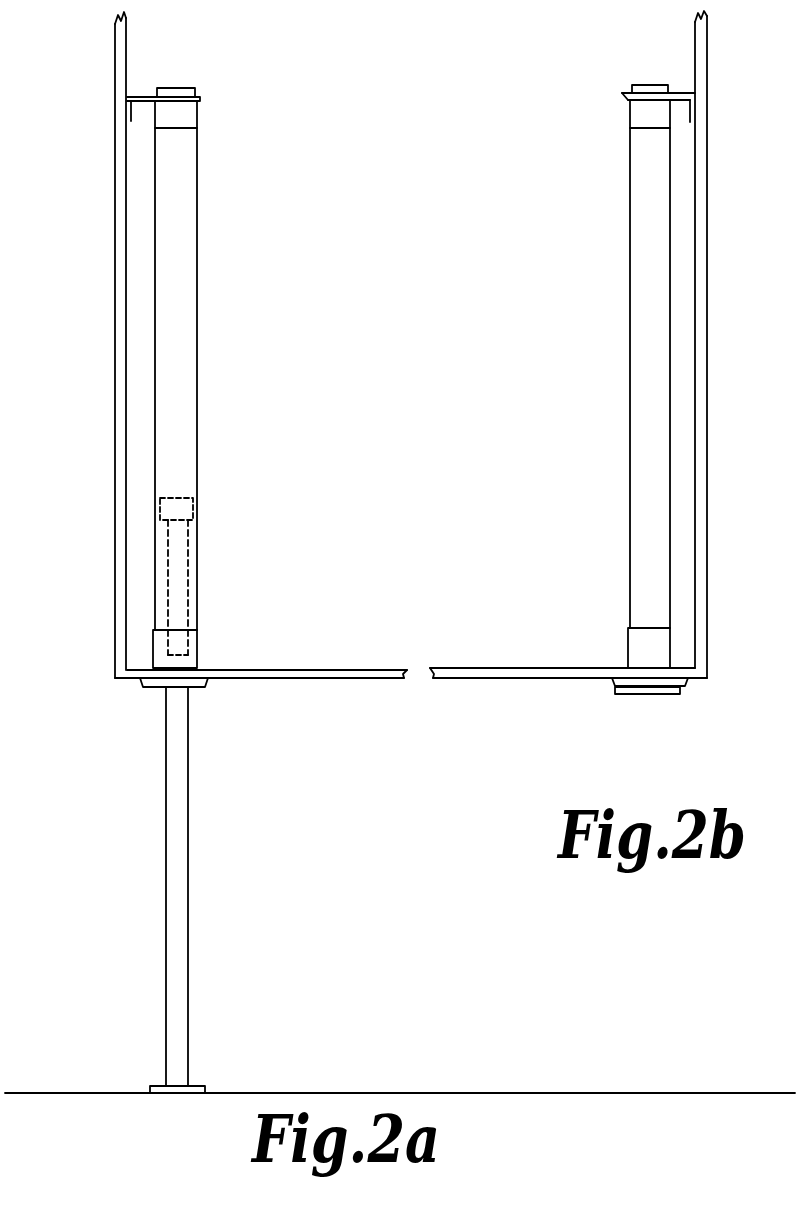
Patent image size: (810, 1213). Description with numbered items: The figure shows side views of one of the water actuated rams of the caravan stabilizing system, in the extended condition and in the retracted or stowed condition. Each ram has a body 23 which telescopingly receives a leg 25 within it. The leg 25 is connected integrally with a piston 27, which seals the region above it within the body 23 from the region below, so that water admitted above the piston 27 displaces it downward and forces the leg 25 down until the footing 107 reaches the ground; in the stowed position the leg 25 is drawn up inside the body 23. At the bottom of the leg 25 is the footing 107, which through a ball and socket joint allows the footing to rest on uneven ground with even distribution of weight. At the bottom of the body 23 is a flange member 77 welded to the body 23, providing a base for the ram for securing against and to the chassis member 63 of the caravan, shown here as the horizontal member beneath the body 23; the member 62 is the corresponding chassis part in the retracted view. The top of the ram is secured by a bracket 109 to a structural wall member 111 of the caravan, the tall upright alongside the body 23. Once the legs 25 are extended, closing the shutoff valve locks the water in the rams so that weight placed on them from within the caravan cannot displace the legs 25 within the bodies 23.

In FIG. 2A, the body 23 is at (197, 392).
In FIG. 2B, the body 23 is at (630, 382).
In FIG. 2A, the leg 25 is at (193, 588).
In FIG. 2A, the piston 27 is at (193, 509).
In FIG. 2B, the base plate 62 is at (585, 680).
In FIG. 2A, the chassis member 63 is at (242, 681).
In FIG. 2A, the flange member 77 is at (144, 689).
In FIG. 2B, the flange member 77 is at (690, 684).
In FIG. 2A, the footing 107 is at (196, 1087).
In FIG. 2B, the footing 107 is at (619, 697).
In FIG. 2A, the bracket 109 is at (142, 97).
In FIG. 2B, the bracket 109 is at (684, 92).
In FIG. 2A, the structural wall member 111 is at (115, 160).
In FIG. 2B, the structural wall member 111 is at (702, 148).